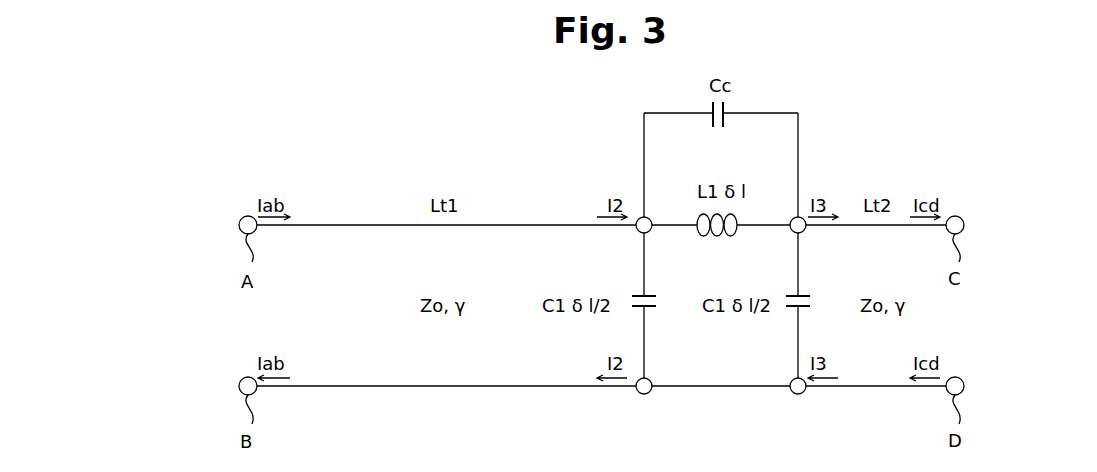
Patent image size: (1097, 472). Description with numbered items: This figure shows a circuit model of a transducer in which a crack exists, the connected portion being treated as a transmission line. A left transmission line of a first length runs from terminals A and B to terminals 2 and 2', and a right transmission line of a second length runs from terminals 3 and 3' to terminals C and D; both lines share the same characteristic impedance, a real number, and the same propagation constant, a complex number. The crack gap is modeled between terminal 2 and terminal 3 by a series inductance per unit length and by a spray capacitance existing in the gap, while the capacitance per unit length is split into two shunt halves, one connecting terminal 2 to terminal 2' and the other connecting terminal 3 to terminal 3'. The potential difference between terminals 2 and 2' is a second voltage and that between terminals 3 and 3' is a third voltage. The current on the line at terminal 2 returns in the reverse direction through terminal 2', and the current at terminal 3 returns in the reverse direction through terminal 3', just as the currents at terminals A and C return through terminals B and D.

The terminal 2 is at (625, 238).
The terminal 3 is at (781, 238).
The terminal 2' is at (624, 397).
The terminal 3' is at (779, 397).